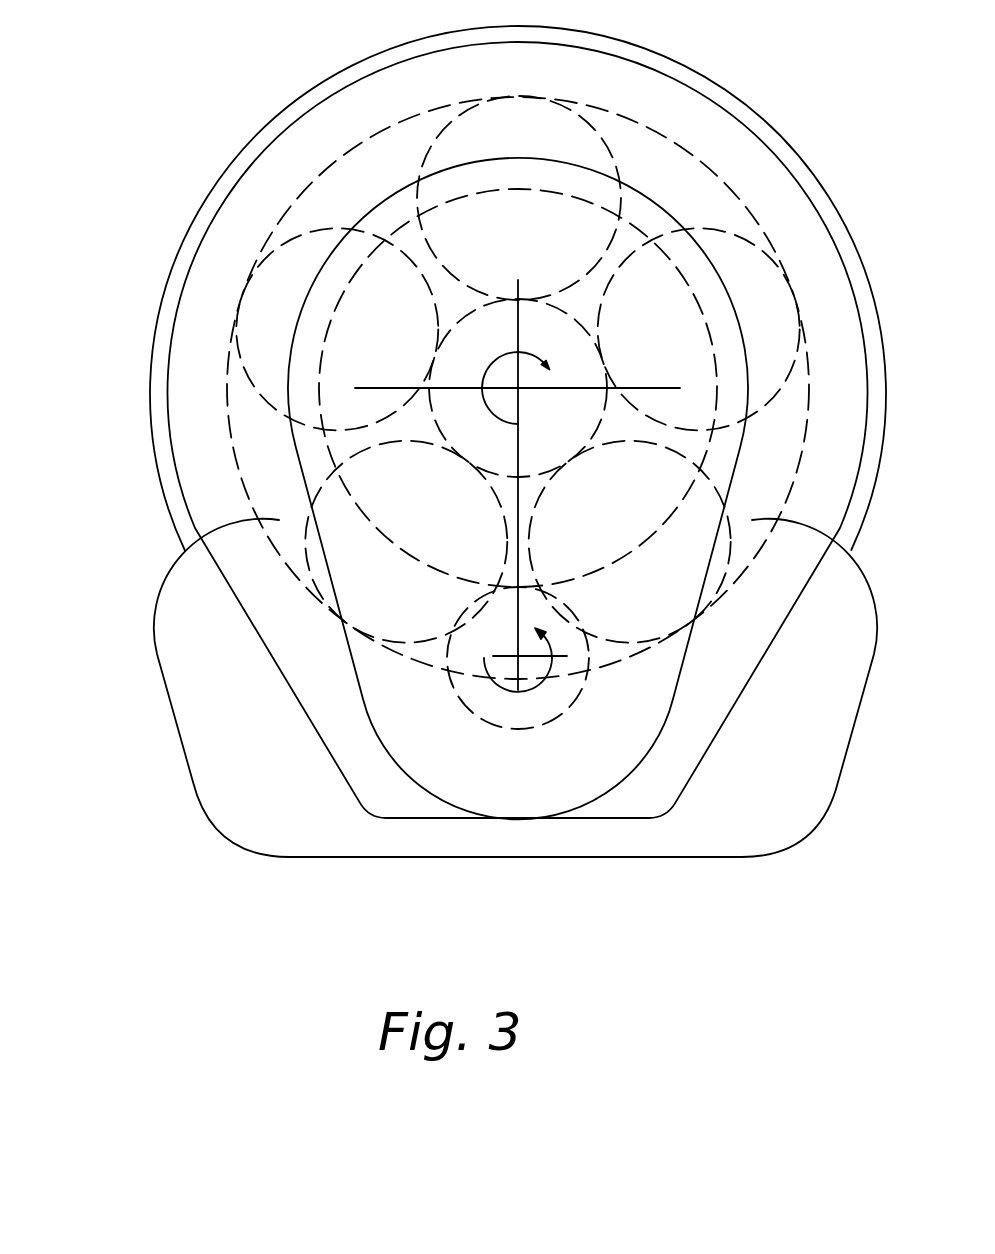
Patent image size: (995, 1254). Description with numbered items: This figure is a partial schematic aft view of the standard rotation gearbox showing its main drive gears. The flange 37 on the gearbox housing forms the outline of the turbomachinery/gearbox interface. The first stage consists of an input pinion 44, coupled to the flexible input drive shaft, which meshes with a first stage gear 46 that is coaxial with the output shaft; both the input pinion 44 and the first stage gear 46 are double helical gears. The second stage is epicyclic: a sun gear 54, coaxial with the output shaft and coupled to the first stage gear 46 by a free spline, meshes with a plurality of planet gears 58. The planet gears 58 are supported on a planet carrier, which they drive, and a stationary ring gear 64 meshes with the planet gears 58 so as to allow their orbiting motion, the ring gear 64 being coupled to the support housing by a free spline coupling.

The flange 37 is at (167, 695).
The input pinion 44 is at (540, 723).
The first stage gear 46 is at (300, 453).
The sun gear 54 is at (627, 453).
The planet gears 58 is at (673, 143).
The stationary ring gear 64 is at (313, 182).